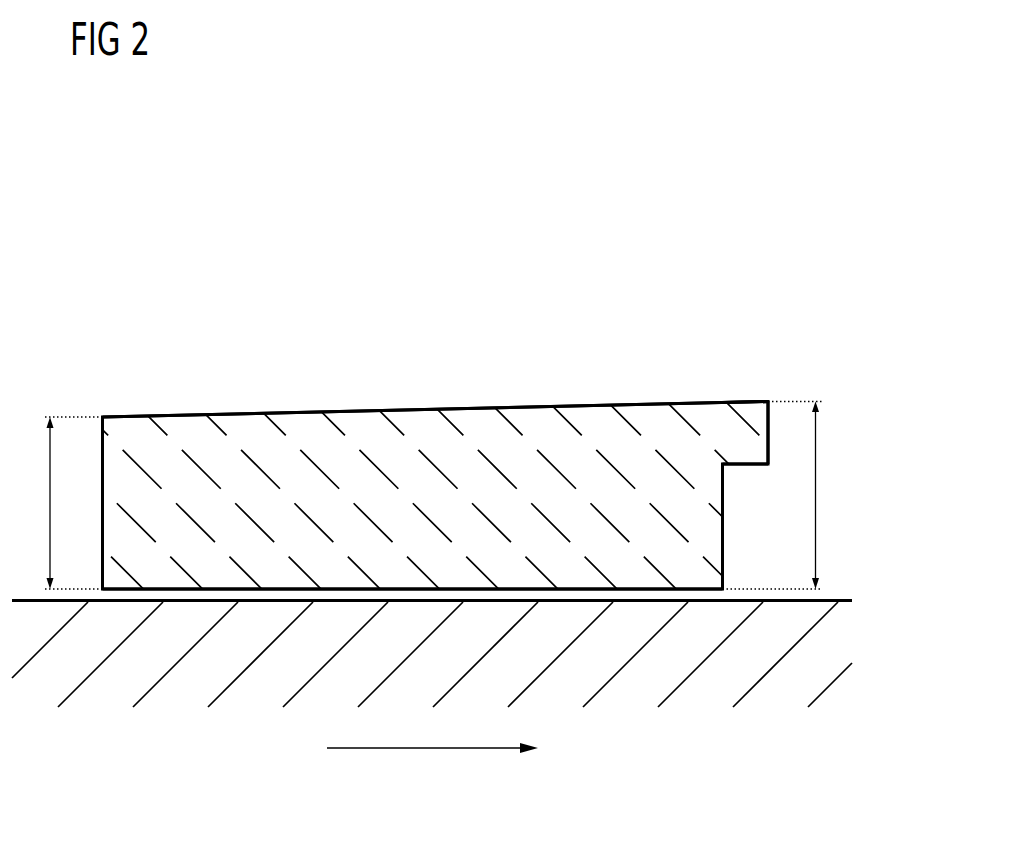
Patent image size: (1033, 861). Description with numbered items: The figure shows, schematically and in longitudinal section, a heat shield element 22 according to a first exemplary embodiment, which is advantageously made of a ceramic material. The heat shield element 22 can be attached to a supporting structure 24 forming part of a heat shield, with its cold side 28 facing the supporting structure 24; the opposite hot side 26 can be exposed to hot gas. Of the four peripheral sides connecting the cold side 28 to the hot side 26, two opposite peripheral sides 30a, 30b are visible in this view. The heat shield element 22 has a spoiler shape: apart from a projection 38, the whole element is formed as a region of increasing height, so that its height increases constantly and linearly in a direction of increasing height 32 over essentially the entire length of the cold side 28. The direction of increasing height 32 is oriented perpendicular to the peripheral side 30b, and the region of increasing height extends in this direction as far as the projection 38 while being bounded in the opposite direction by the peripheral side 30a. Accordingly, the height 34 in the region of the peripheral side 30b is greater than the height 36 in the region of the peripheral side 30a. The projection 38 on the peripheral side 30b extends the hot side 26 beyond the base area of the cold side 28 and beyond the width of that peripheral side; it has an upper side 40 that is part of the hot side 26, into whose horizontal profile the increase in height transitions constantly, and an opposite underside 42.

The heat shield element 22 is at (596, 309).
The supporting structure 24 is at (252, 635).
The hot side 26 is at (190, 410).
The cold side 28 is at (130, 600).
The peripheral side 30a is at (94, 457).
The peripheral side 30b is at (730, 543).
The direction of increasing height 32 is at (422, 750).
The height 34 is at (817, 495).
The height 36 is at (50, 513).
The projection 38 is at (734, 436).
The upper side 40 is at (758, 392).
The underside 42 is at (745, 472).